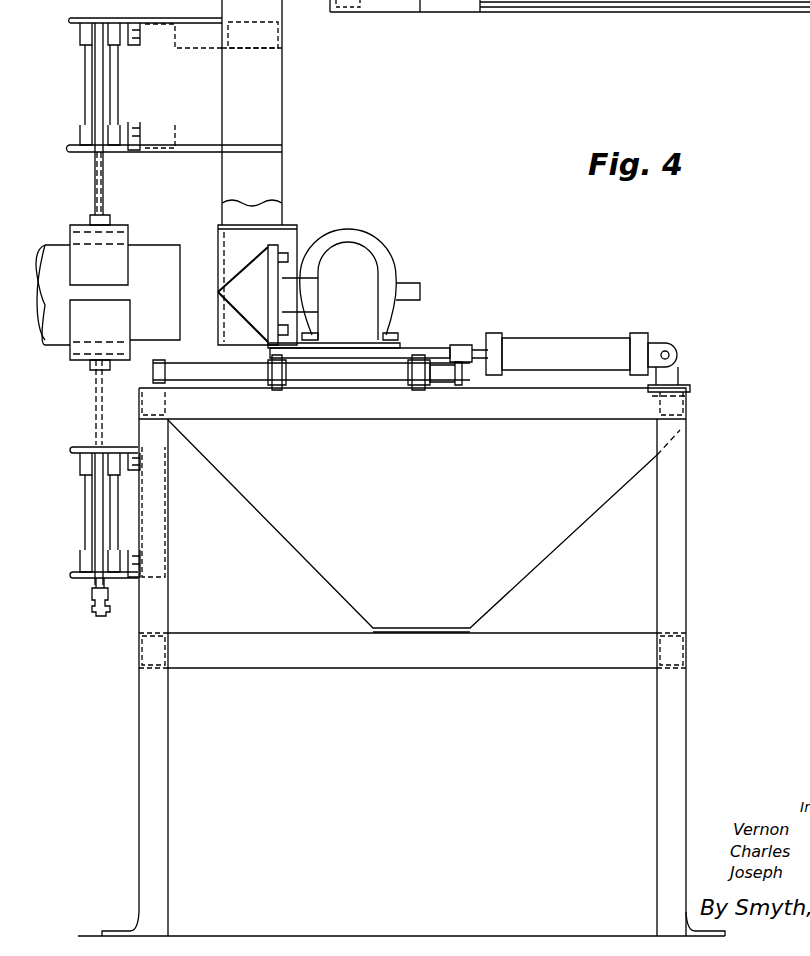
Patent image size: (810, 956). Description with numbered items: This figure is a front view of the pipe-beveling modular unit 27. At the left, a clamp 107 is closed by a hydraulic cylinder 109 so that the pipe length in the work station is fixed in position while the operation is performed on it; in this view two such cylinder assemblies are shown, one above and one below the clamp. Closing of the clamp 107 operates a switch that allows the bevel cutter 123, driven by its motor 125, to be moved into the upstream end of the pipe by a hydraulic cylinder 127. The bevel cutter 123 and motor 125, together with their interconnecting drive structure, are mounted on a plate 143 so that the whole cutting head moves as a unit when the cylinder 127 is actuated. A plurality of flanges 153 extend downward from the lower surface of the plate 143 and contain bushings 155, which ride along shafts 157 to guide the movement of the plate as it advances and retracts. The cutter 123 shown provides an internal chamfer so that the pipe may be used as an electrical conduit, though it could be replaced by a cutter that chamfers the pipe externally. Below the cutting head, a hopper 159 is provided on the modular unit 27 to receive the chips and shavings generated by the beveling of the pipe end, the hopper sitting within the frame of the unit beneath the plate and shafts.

The modular unit 27 is at (638, 516).
The clamp 107 is at (112, 258).
The hydraulic cylinder 109 is at (117, 94).
The bevel cutter 123 is at (253, 268).
The motor 125 is at (370, 232).
The hydraulic cylinder 127 is at (590, 350).
The plate 143 is at (350, 353).
The flange 153 is at (278, 375).
The bushing 155 is at (402, 375).
The shaft 157 is at (300, 372).
The hopper 159 is at (520, 565).